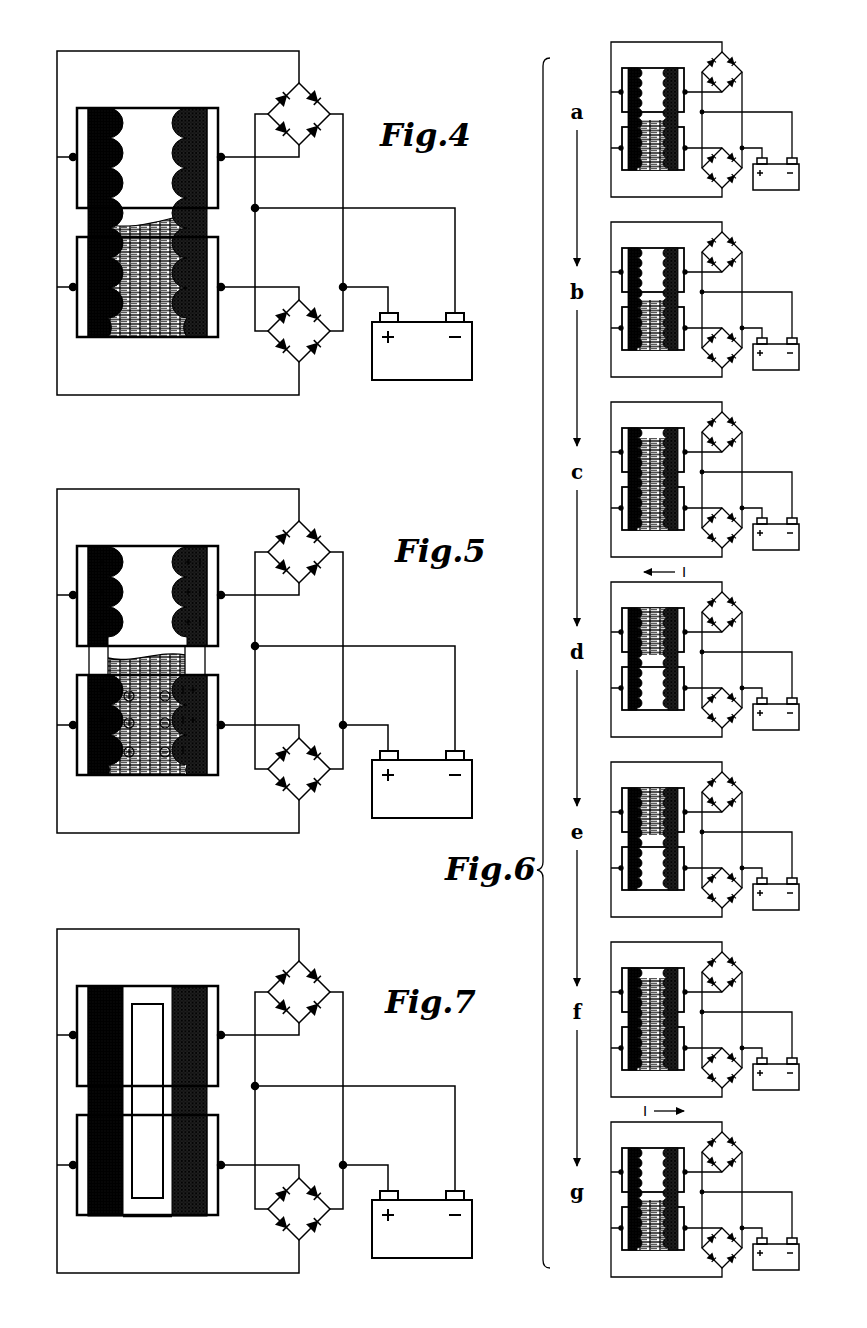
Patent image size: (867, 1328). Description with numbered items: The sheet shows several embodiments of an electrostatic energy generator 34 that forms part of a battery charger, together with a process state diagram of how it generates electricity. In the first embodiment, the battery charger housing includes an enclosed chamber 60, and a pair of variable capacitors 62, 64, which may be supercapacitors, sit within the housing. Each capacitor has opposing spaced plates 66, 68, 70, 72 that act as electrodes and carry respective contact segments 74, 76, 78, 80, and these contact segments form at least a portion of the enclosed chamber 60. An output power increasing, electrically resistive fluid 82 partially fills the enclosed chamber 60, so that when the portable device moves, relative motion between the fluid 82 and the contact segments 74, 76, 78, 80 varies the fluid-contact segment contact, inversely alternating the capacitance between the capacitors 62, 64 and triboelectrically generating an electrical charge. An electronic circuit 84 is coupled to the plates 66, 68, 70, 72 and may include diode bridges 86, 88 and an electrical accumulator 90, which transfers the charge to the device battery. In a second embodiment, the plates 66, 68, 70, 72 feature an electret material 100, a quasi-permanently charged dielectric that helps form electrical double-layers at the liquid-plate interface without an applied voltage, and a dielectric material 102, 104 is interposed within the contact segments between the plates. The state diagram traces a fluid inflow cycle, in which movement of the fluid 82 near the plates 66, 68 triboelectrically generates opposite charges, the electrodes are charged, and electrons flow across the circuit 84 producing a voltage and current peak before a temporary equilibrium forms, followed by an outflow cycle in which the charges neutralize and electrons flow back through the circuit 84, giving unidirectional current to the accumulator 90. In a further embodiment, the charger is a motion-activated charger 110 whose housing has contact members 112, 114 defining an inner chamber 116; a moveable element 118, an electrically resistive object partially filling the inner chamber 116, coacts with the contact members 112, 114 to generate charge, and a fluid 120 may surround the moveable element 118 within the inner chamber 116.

In FIG. 4, the electrostatic energy generator 34 is at (353, 102).
In FIG. 5, the electrostatic energy generator 34 is at (237, 650).
In FIG. 7, the electrostatic energy generator 34 is at (237, 1091).
In FIG. 4, the enclosed chamber 60 is at (172, 204).
In FIG. 5, the enclosed chamber 60 is at (172, 642).
In FIG. 4, the variable capacitor 62 is at (128, 135).
In FIG. 5, the variable capacitor 62 is at (128, 547).
In FIG. 7, the variable capacitor 62 is at (128, 1013).
In FIG. 4, the variable capacitor 64 is at (128, 315).
In FIG. 5, the variable capacitor 64 is at (128, 753).
In FIG. 7, the variable capacitor 64 is at (128, 1193).
In FIG. 4, the opposing spaced plate 66 is at (74, 123).
In FIG. 5, the opposing spaced plate 66 is at (74, 561).
In FIG. 7, the opposing spaced plate 66 is at (74, 1001).
In FIG. 4, the opposing spaced plate 68 is at (219, 123).
In FIG. 5, the opposing spaced plate 68 is at (219, 561).
In FIG. 7, the opposing spaced plate 68 is at (219, 1001).
In FIG. 4, the opposing spaced plate 70 is at (76, 322).
In FIG. 5, the opposing spaced plate 70 is at (76, 760).
In FIG. 7, the opposing spaced plate 70 is at (76, 1200).
In FIG. 4, the opposing spaced plate 72 is at (219, 322).
In FIG. 5, the opposing spaced plate 72 is at (219, 760).
In FIG. 7, the opposing spaced plate 72 is at (219, 1200).
In FIG. 4, the contact segment 74 is at (129, 107).
In FIG. 5, the contact segment 74 is at (129, 545).
In FIG. 4, the contact segment 76 is at (168, 148).
In FIG. 5, the contact segment 76 is at (168, 586).
In FIG. 4, the contact segment 78 is at (130, 323).
In FIG. 5, the contact segment 78 is at (130, 761).
In FIG. 4, the contact segment 80 is at (165, 323).
In FIG. 5, the contact segment 80 is at (165, 761).
In FIG. 4, the output power increasing, electrically resistive fluid 82 is at (142, 226).
In FIG. 5, the output power increasing, electrically resistive fluid 82 is at (173, 659).
In FIG. 4, the electronic circuit 84 is at (360, 190).
In FIG. 5, the electronic circuit 84 is at (354, 660).
In FIG. 7, the electronic circuit 84 is at (354, 1100).
In FIG. 4, the diode bridge 86 is at (318, 97).
In FIG. 5, the diode bridge 86 is at (316, 544).
In FIG. 7, the diode bridge 86 is at (316, 984).
In FIG. 4, the diode bridge 88 is at (318, 346).
In FIG. 5, the diode bridge 88 is at (316, 774).
In FIG. 7, the diode bridge 88 is at (316, 1214).
In FIG. 4, the electrical accumulator 90 is at (419, 322).
In FIG. 5, the electrical accumulator 90 is at (422, 760).
In FIG. 7, the electrical accumulator 90 is at (422, 1200).
In FIG. 5, the electret material 100 is at (146, 547).
In FIG. 5, the dielectric material 102 is at (131, 645).
In FIG. 5, the dielectric material 104 is at (160, 651).
In FIG. 7, the motion-activated charger 110 is at (119, 1221).
In FIG. 7, the contact member 112 is at (113, 1127).
In FIG. 7, the contact member 114 is at (166, 987).
In FIG. 7, the inner chamber 116 is at (157, 1074).
In FIG. 7, the moveable element 118 is at (156, 1198).
In FIG. 7, the fluid 120 is at (143, 1212).